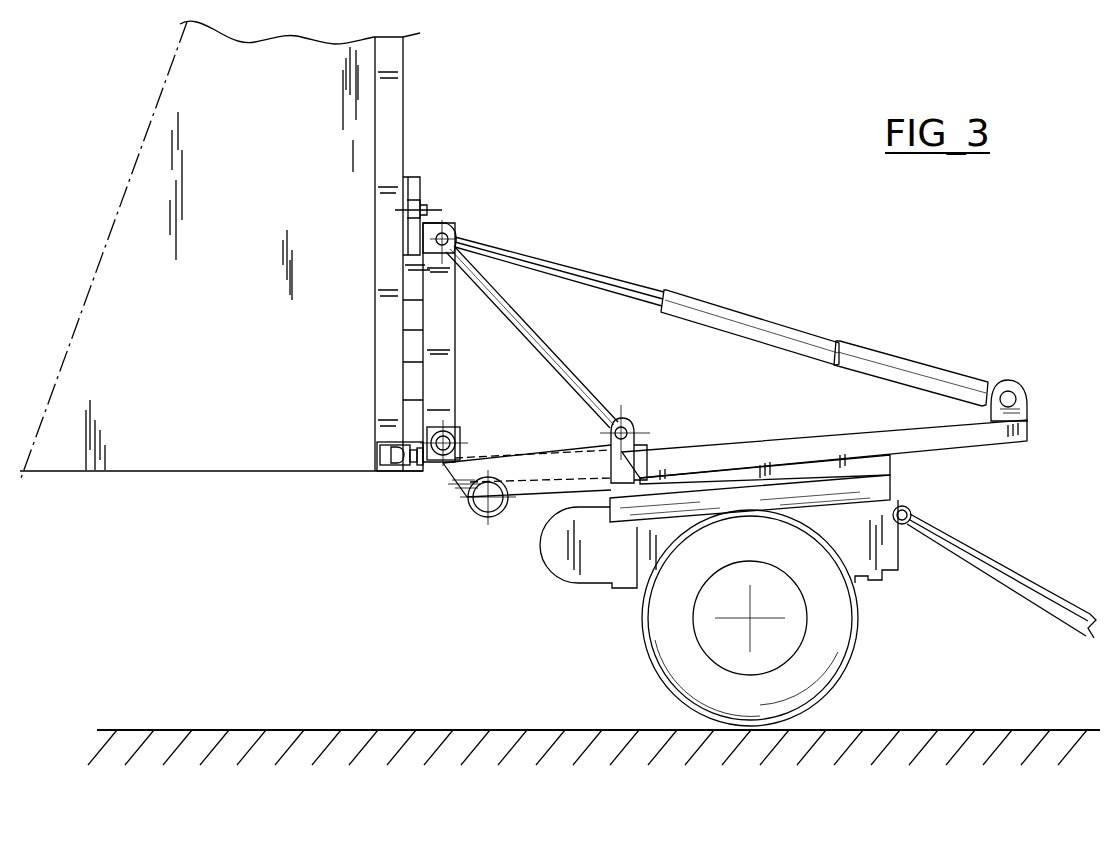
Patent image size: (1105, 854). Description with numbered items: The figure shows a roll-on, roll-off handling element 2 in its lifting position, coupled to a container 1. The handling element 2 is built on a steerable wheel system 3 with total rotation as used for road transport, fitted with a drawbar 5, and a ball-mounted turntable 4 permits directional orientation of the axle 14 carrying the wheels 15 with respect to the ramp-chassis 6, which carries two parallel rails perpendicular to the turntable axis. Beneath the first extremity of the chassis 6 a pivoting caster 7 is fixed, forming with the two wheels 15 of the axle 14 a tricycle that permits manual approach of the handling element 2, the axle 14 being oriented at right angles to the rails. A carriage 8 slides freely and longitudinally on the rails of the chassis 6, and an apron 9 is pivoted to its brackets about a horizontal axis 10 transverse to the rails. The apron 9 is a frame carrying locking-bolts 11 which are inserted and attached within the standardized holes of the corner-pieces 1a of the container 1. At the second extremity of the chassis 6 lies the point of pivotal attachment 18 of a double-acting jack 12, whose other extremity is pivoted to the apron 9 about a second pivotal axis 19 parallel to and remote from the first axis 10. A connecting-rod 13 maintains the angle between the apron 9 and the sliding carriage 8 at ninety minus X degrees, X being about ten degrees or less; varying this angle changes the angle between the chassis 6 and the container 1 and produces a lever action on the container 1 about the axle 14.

The container 1 is at (152, 273).
The corner-piece 1a is at (402, 465).
The roll-on, roll-off handling element 2 is at (683, 268).
The steerable wheel system 3 is at (631, 631).
The ball-mounted turntable 4 is at (868, 464).
The drawbar 5 is at (1047, 598).
The ramp-chassis 6 is at (770, 452).
The pivoting caster 7 is at (494, 510).
The carriage 8 is at (542, 470).
The apron 9 is at (445, 372).
The horizontal axis 10 is at (436, 462).
The locking-bolt 11 is at (413, 470).
The jack 12 is at (775, 325).
The connecting-rod 13 is at (553, 352).
The axle 14 is at (752, 617).
The wheel 15 is at (827, 677).
The point of pivotal attachment 18 is at (1009, 398).
The second pivotal axis 19 is at (445, 235).